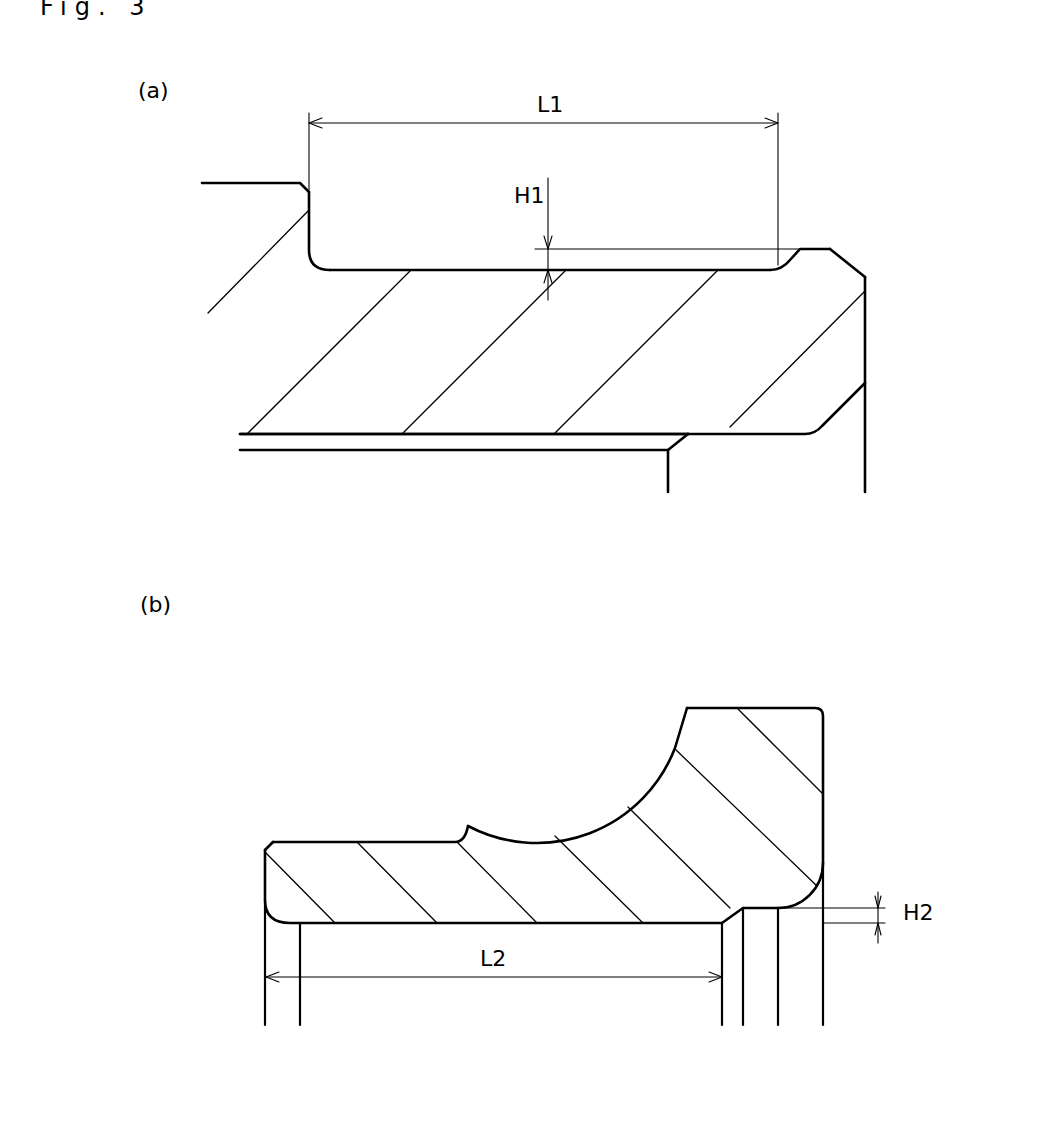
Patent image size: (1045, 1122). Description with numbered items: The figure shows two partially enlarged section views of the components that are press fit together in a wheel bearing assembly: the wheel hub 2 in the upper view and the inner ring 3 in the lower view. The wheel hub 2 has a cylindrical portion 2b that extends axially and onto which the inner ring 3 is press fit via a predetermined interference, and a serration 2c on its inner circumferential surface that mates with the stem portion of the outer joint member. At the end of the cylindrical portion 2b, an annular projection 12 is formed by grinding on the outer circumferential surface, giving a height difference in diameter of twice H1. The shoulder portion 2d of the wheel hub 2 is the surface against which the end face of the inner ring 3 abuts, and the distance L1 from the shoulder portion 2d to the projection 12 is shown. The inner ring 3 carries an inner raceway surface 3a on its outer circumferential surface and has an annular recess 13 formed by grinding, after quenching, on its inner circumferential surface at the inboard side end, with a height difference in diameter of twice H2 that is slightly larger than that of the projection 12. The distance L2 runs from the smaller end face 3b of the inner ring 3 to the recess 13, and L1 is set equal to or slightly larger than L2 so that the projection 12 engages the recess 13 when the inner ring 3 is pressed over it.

The wheel hub 2 is at (340, 333).
The cylindrical portion 2b is at (677, 267).
The serration 2c is at (507, 440).
The shoulder portion 2d is at (310, 205).
The annular projection 12 is at (815, 253).
The inner ring 3 is at (768, 785).
The inner raceway surface 3a is at (650, 780).
The smaller end face 3b is at (265, 872).
The annular recess 13 is at (758, 908).